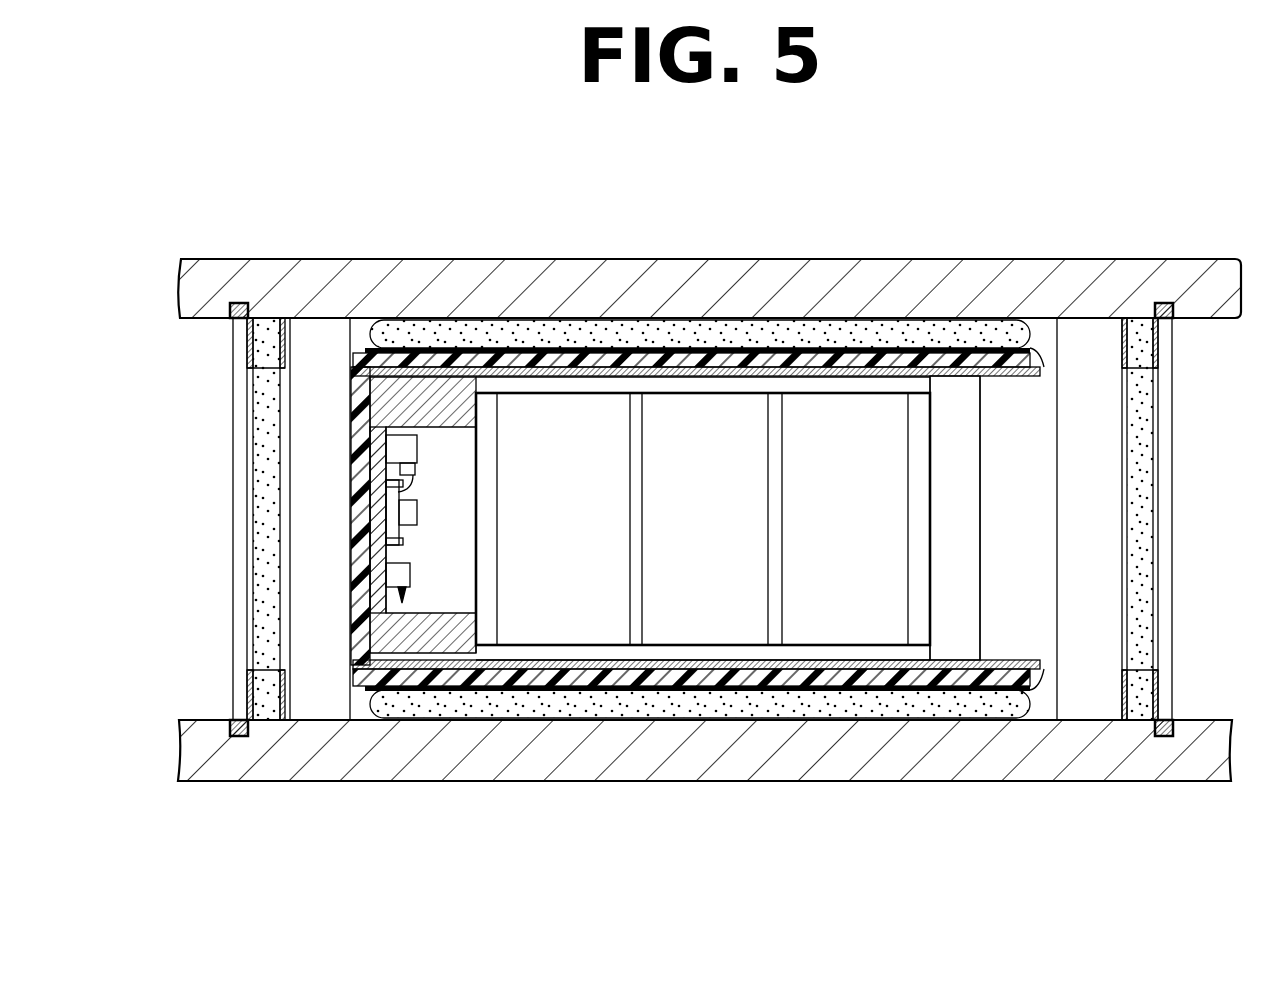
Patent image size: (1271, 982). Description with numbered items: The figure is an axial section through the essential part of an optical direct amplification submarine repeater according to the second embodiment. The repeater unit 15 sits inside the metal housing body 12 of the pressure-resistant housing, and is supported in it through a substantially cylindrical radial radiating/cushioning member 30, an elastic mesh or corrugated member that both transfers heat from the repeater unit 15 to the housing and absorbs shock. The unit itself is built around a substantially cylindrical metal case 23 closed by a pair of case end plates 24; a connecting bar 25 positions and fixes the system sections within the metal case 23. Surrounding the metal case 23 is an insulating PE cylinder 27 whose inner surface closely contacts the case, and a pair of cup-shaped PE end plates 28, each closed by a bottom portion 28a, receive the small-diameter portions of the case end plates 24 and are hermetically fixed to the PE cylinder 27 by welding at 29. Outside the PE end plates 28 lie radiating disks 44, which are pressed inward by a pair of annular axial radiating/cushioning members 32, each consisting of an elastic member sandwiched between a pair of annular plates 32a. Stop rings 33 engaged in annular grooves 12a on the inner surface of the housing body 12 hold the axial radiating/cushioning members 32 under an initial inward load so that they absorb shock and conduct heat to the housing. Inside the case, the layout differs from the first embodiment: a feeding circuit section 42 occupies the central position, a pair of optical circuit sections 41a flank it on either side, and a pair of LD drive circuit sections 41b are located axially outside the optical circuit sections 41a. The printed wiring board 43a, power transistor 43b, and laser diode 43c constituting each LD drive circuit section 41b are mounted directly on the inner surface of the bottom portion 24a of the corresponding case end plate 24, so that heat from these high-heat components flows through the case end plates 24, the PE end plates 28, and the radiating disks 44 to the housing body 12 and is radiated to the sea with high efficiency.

The housing body 12 is at (657, 265).
The annular grooves 12a is at (233, 737).
The repeater unit 15 is at (712, 640).
The metal case 23 is at (800, 355).
The case end plates 24 is at (458, 385).
The bottom portion 24a is at (375, 514).
The connecting bar 25 is at (586, 385).
The PE cylinder 27 is at (527, 372).
The PE end plates 28 is at (398, 355).
The bottom portion 28a is at (350, 443).
The welding 29 is at (363, 330).
The radial radiating/cushioning member 30 is at (738, 332).
The axial radiating/cushioning members 32 is at (262, 617).
The annular plates 32a is at (282, 478).
The stop rings 33 is at (235, 391).
The optical circuit sections 41a is at (560, 630).
The LD drive circuit sections 41b is at (445, 597).
The feeding circuit section 42 is at (742, 625).
The printed wiring board 43a is at (418, 510).
The power transistor 43b is at (418, 450).
The laser diode 43c is at (410, 572).
The radiating disks 44 is at (310, 330).